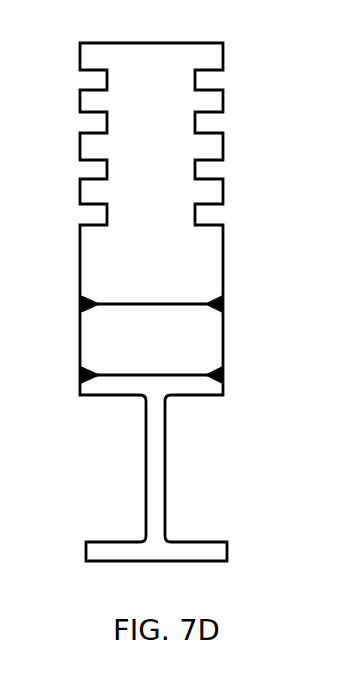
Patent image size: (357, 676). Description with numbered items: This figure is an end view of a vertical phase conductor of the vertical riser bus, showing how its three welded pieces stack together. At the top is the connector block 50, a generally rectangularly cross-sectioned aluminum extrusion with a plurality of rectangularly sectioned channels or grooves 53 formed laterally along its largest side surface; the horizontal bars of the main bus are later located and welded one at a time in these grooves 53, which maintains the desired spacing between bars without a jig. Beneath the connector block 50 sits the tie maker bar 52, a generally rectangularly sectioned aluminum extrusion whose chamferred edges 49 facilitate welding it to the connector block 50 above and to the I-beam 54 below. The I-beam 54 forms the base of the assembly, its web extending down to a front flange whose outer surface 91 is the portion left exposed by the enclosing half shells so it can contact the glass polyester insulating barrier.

The channels 53 is at (86, 83).
The connector block 50 is at (99, 262).
The chamferred edges 49 is at (87, 312).
The tie maker bar 52 is at (96, 344).
The I-beams 54 is at (131, 385).
The outer surface of the front flange 91 is at (153, 560).